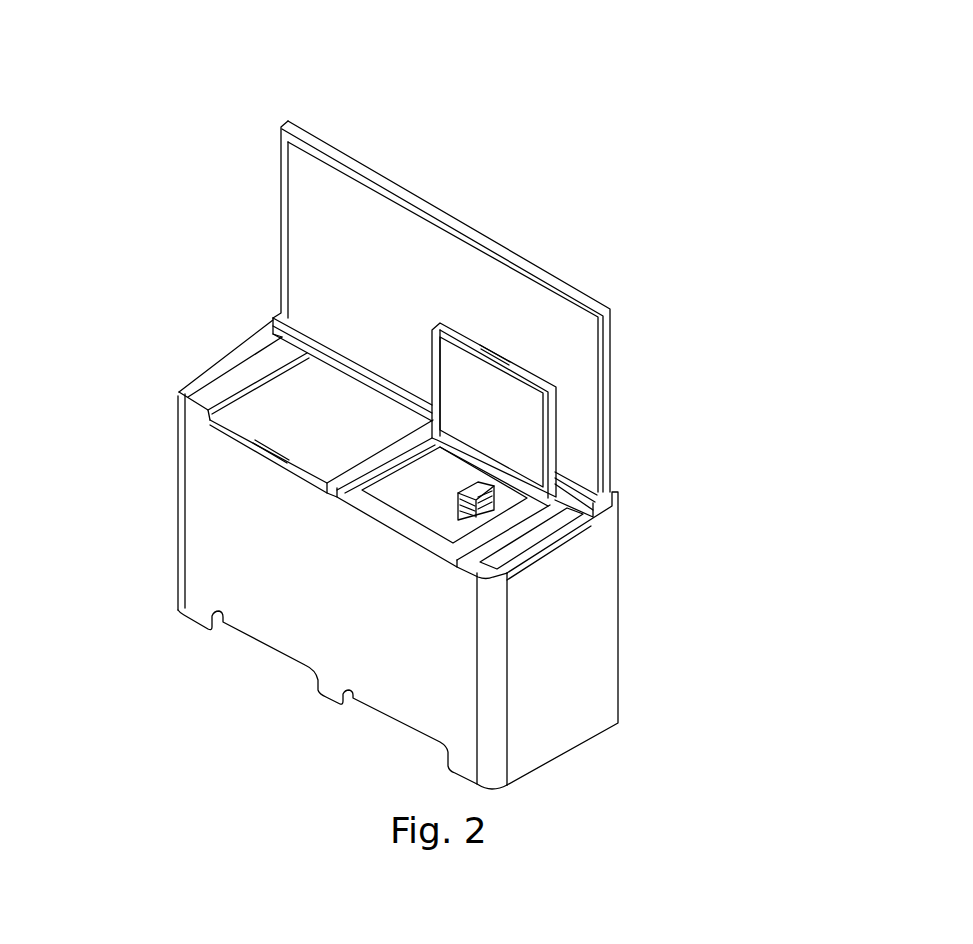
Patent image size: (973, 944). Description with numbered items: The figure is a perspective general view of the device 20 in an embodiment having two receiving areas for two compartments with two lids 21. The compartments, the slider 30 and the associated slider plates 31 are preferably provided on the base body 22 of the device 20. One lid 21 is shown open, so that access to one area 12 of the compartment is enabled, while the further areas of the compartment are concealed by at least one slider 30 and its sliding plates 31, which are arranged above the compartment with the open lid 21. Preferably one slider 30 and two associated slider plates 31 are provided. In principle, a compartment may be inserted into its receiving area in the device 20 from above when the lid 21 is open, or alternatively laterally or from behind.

The device 20 is at (733, 173).
The area 12 is at (505, 497).
The lid 21 is at (556, 428).
The base body 22 is at (597, 627).
The slider 30 is at (407, 493).
The slider plate 31 is at (460, 523).